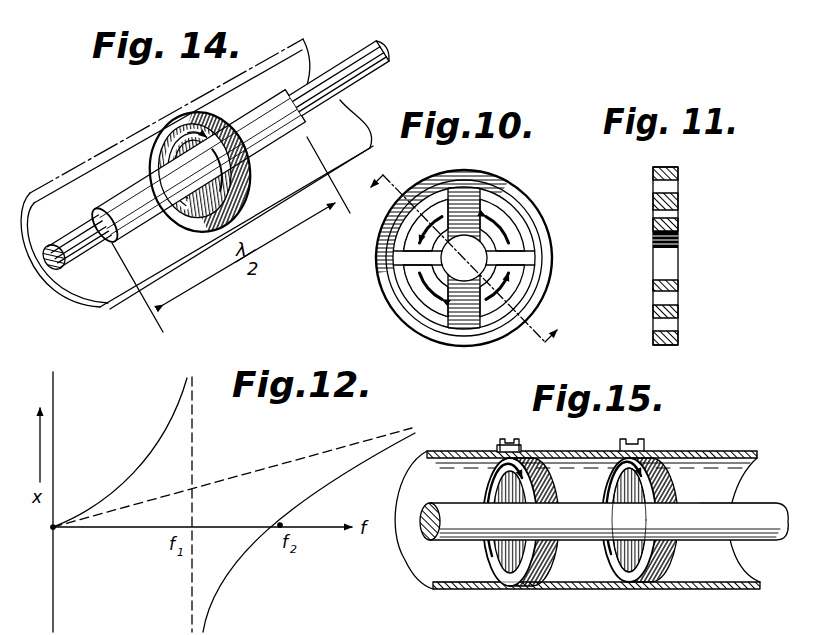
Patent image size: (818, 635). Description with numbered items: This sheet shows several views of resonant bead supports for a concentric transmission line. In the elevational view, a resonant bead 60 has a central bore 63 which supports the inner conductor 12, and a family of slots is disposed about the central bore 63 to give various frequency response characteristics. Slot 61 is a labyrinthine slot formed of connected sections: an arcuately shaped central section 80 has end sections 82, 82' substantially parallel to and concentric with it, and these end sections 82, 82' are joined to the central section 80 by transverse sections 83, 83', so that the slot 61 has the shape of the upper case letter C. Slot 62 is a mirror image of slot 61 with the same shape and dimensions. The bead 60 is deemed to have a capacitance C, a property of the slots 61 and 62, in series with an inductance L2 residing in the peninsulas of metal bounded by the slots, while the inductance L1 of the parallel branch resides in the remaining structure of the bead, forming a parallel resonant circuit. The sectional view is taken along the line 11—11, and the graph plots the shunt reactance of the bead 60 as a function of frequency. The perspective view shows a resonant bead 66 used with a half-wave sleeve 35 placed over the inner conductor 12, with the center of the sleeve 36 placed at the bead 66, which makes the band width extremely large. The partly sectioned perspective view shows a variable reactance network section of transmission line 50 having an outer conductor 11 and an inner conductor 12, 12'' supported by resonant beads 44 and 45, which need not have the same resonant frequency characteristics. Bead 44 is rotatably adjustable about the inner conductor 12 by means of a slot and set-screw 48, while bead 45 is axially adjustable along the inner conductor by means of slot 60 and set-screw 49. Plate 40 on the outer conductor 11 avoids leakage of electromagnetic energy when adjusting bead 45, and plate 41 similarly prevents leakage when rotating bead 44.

In FIG. 14, the inner conductor 12 is at (242, 157).
In FIG. 15, the inner conductor 12 is at (573, 542).
In FIG. 15, the inner conductor 12'' is at (740, 486).
In FIG. 14, the half-wave sleeve 35 is at (153, 197).
In FIG. 14, the center of the sleeve 36 is at (212, 136).
In FIG. 14, the resonant bead 66 is at (250, 177).
In FIG. 10, the outer conductor 11 is at (463, 266).
In FIG. 15, the outer conductor 11 is at (755, 450).
In FIG. 10, the resonant bead 60 is at (464, 249).
In FIG. 11, the resonant bead 60 is at (684, 337).
In FIG. 15, the resonant bead 60 is at (617, 450).
In FIG. 10, the slot 61 is at (438, 258).
In FIG. 11, the slot 61 is at (672, 187).
In FIG. 10, the slot 62 is at (489, 258).
In FIG. 10, the central bore 63 is at (513, 235).
In FIG. 11, the central bore 63 is at (675, 252).
In FIG. 10, the central section 80 is at (448, 266).
In FIG. 10, the end section 82 is at (418, 314).
In FIG. 11, the end section 82 is at (688, 273).
In FIG. 10, the end section 82' is at (389, 239).
In FIG. 10, the transverse section 83 is at (431, 324).
In FIG. 10, the transverse section 83' is at (425, 198).
In FIG. 10, the capacitance C is at (463, 258).
In FIG. 10, the inductance L1 is at (483, 258).
In FIG. 10, the inductance L2 is at (471, 256).
In FIG. 15, the plate 40 is at (703, 450).
In FIG. 15, the plate 41 is at (500, 450).
In FIG. 15, the resonant bead 44 is at (545, 582).
In FIG. 15, the resonant bead 45 is at (682, 582).
In FIG. 15, the set-screw 48 is at (516, 444).
In FIG. 15, the set-screw 49 is at (642, 446).
In FIG. 15, the transmission line 50 is at (512, 591).